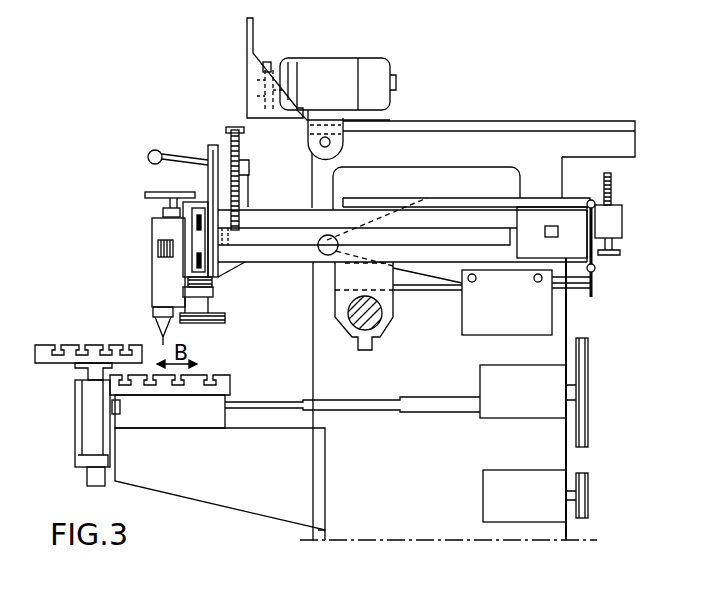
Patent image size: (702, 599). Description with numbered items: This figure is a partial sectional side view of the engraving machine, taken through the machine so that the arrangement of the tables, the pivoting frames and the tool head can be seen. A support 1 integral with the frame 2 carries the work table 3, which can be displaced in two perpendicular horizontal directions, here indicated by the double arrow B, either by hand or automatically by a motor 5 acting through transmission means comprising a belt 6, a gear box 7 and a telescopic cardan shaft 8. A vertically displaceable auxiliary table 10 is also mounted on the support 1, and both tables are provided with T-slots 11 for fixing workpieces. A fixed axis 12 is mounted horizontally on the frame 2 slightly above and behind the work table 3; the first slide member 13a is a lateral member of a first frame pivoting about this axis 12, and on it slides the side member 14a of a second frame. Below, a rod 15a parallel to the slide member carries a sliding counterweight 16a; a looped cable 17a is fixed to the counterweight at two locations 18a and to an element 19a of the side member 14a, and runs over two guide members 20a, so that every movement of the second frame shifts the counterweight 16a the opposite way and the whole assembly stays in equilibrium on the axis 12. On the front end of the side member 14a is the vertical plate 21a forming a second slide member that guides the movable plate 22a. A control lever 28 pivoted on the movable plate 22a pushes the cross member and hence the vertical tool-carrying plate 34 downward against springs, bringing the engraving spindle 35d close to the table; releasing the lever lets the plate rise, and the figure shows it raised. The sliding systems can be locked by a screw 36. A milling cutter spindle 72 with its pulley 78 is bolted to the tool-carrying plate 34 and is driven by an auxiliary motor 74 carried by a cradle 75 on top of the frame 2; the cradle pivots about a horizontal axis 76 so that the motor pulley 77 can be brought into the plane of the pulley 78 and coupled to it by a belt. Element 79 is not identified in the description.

The support 1 is at (190, 480).
The frame 2 is at (328, 373).
The work table 3 is at (206, 372).
The motor 5 is at (495, 494).
The belt 6 is at (580, 453).
The gear box 7 is at (530, 405).
The telescopic cardan shaft 8 is at (384, 401).
The auxiliary table 10 is at (62, 355).
The T-slots 11 is at (75, 348).
The fixed axis 12 is at (375, 312).
The first slide member 13a is at (283, 238).
The side member of second frame 14a is at (275, 216).
The rod 15a is at (441, 290).
The counterweight 16a is at (525, 318).
The cable 17a is at (548, 198).
The attachment locations 18a is at (538, 282).
The element of side member 19a is at (428, 203).
The guide members 20a is at (596, 204).
The vertical plate 21a is at (214, 140).
The movable plate 22a is at (207, 165).
The control lever 28 is at (178, 150).
The tool-carrying plate 34 is at (193, 264).
The engraving tool 35d is at (160, 285).
The screw 36 is at (558, 232).
The milling cutter spindle 72 is at (168, 209).
The auxiliary motor 74 is at (372, 78).
The cradle 75 is at (246, 33).
The horizontal axis 76 is at (330, 144).
The pulley 77 is at (269, 60).
The pulley 78 is at (145, 194).
The overarm 79 is at (517, 128).